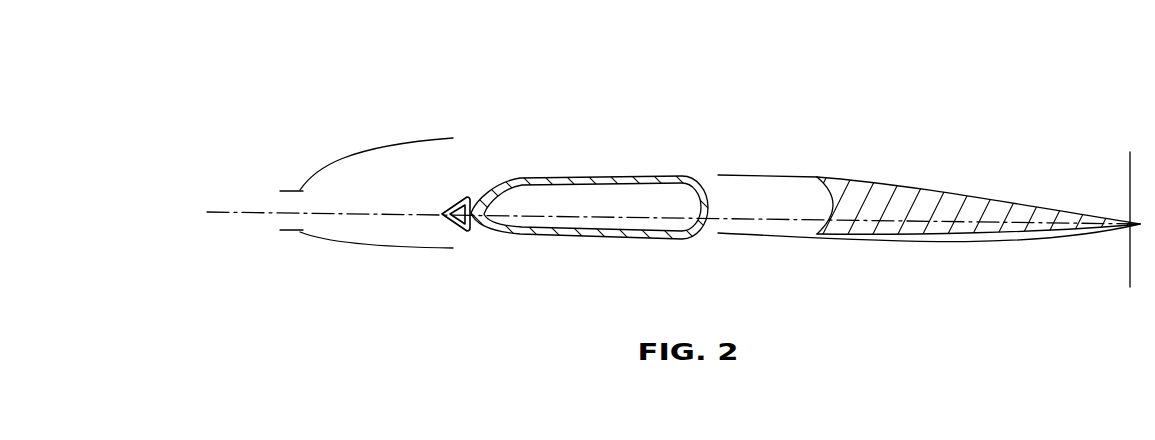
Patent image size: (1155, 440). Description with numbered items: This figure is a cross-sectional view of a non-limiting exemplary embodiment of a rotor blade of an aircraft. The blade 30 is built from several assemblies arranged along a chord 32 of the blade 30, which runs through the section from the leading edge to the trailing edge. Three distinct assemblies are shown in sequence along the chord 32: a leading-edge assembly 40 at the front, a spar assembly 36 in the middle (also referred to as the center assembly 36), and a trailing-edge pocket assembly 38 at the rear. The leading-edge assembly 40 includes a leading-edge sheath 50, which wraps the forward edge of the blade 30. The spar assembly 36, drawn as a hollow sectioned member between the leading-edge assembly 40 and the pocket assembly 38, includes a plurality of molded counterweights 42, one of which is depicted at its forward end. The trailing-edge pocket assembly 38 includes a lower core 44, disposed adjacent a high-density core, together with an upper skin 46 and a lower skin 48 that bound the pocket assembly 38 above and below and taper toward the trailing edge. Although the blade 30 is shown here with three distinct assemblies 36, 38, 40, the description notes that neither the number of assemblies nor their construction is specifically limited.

The blade 30 is at (366, 64).
The chord 32 is at (244, 211).
The spar assembly 36 is at (600, 176).
The trailing-edge pocket assembly 38 is at (907, 172).
The leading-edge assembly 40 is at (387, 141).
The molded counterweights 42 is at (454, 200).
The lower core 44 is at (983, 213).
The upper skin 46 is at (797, 176).
The lower skin 48 is at (807, 238).
The leading-edge sheath 50 is at (324, 158).